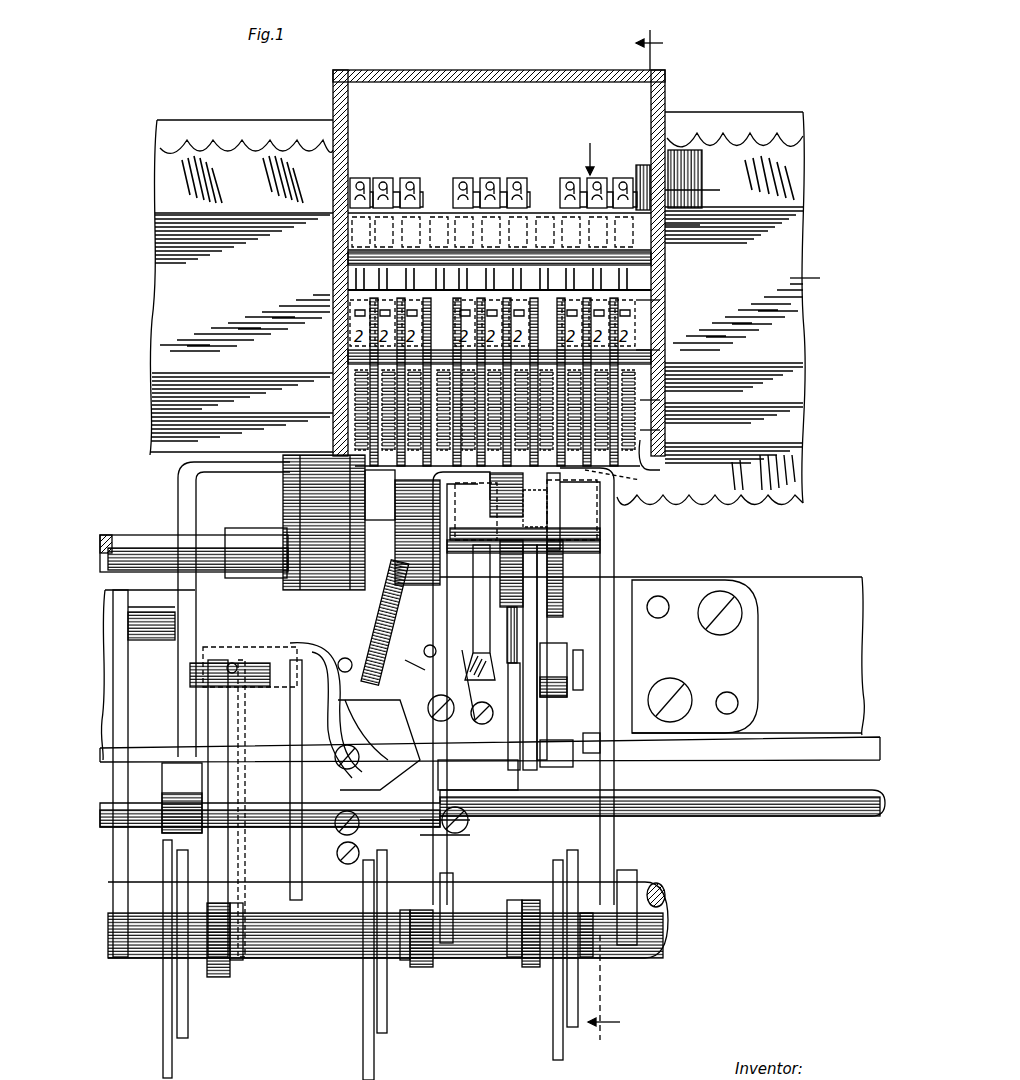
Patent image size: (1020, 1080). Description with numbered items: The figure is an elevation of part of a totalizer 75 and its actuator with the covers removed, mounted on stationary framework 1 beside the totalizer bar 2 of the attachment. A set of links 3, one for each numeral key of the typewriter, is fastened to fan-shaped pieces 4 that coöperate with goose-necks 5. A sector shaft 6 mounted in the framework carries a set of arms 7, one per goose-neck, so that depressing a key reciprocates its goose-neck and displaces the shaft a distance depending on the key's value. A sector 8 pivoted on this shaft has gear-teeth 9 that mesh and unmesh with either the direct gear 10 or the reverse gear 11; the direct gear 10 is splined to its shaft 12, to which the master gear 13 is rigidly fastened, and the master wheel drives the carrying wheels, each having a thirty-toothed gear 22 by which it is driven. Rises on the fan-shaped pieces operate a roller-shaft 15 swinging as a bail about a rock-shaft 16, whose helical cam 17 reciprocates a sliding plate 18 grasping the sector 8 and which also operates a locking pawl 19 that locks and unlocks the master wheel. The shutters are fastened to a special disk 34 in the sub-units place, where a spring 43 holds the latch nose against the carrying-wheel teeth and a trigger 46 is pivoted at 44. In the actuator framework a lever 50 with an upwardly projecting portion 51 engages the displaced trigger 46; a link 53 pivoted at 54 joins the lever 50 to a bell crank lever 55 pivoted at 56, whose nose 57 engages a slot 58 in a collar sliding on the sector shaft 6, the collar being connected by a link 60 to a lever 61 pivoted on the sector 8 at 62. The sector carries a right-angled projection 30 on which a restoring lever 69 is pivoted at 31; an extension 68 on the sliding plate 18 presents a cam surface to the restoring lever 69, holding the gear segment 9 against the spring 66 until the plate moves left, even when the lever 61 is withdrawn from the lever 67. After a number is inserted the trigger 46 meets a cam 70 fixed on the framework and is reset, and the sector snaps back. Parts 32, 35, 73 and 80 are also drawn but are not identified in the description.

The stationary framework 1 is at (808, 590).
The totalizer bar 2 is at (633, 542).
The links 3 is at (172, 1058).
The fan-shaped pieces 4 is at (188, 1006).
The goose-necks 5 is at (228, 977).
The sector shaft 6 is at (662, 890).
The arms 7 is at (240, 864).
The sector 8 is at (337, 856).
The gear-teeth 9 is at (392, 598).
The direct gear 10 is at (318, 590).
The reverse gear 11 is at (404, 502).
The shaft 12 is at (205, 522).
The master gear 13 is at (692, 223).
The roller-shaft 15 is at (812, 278).
The rock-shaft 16 is at (876, 748).
The helical cam 17 is at (340, 720).
The sliding plate 18 is at (278, 650).
The locking pawl 19 is at (520, 631).
The thirty-toothed gear 22 is at (624, 483).
The right-angled projection 30 is at (300, 676).
The pivot 31 is at (385, 639).
The type 32 is at (642, 176).
The special disk 34 is at (660, 300).
The lever 35 is at (669, 459).
The spring 43 is at (702, 185).
The pivot 44 is at (660, 352).
The trigger 46 is at (660, 400).
The lever 50 is at (500, 500).
The upwardly projecting portion 51 is at (418, 654).
The link 53 is at (478, 600).
The pivot 54 is at (470, 716).
The bell crank lever 55 is at (463, 676).
The pivot 56 is at (440, 752).
The nose 57 is at (580, 496).
The slot 58 is at (478, 777).
The link 60 is at (455, 836).
The lever 61 is at (335, 826).
The pivot 62 is at (371, 655).
The spring 66 is at (515, 178).
The lever 67 is at (345, 740).
The extension 68 is at (446, 275).
The restoring lever 69 is at (231, 669).
The cam 70 is at (490, 488).
The rod 73 is at (500, 566).
The totalizer 75 is at (492, 60).
The plate 80 is at (660, 430).